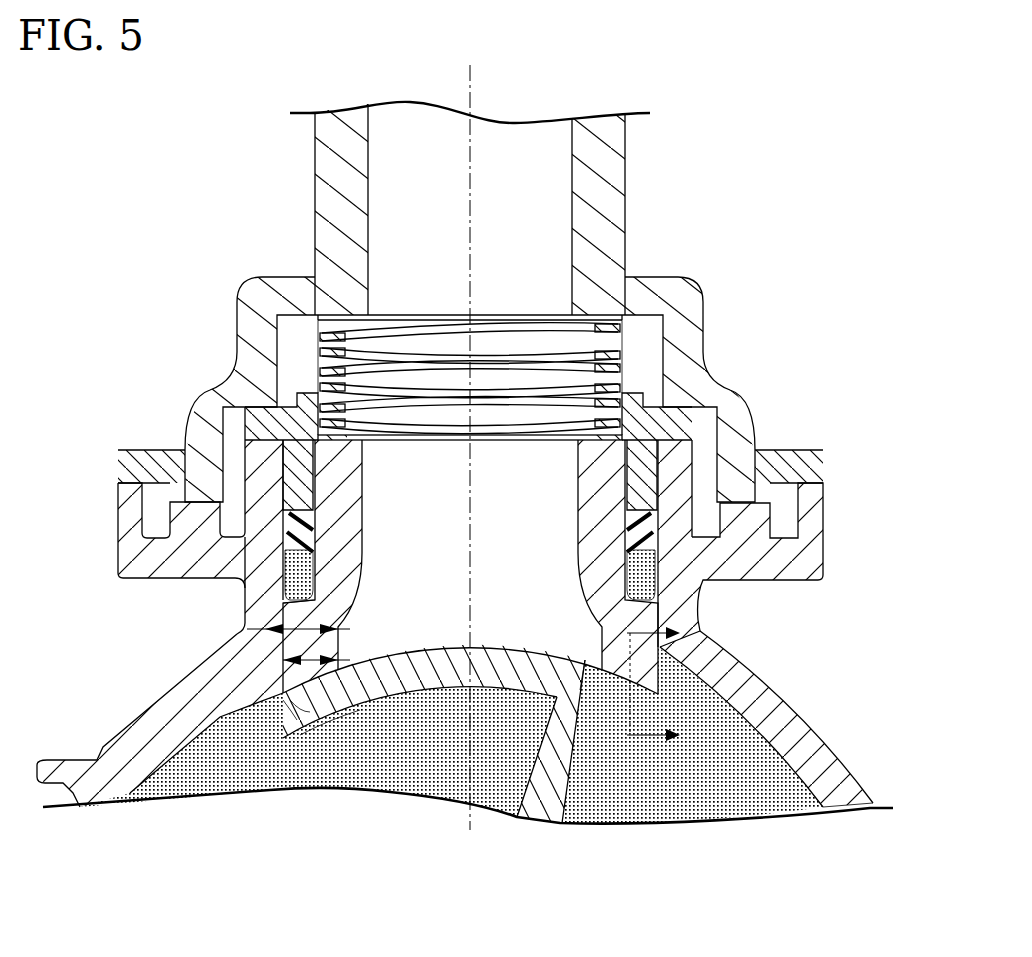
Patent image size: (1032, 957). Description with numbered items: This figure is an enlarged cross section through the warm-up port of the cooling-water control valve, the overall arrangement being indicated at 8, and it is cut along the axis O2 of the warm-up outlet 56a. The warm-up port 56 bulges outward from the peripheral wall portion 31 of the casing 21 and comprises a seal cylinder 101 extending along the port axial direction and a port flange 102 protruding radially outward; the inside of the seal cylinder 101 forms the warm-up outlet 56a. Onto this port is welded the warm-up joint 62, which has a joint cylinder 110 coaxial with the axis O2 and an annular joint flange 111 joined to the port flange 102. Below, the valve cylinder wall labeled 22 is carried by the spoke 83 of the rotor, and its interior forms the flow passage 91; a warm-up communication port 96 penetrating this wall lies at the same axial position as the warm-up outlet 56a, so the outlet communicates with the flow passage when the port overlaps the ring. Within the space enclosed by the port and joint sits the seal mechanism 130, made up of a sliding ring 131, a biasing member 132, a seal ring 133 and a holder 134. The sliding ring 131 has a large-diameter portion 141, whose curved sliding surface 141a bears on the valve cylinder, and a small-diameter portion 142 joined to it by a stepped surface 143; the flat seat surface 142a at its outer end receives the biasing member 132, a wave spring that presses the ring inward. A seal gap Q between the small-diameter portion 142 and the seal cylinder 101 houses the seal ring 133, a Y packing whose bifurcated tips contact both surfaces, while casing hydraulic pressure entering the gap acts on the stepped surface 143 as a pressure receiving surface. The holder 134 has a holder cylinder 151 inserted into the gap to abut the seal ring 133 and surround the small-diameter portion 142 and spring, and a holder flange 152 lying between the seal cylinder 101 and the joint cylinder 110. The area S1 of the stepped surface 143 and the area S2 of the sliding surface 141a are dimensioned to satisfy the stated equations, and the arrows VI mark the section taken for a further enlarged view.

The sealing device 8 is at (790, 110).
The axis of the warm-up outlet O2 is at (475, 74).
The warm-up joint 62 is at (640, 182).
The joint cylinder 110 is at (245, 313).
The biasing member 132 is at (607, 318).
The small-diameter portion 142 is at (395, 433).
The seat surface 142a is at (347, 420).
The seal mechanism 130 is at (645, 353).
The holder flange 152 is at (680, 420).
The holder 134 is at (712, 415).
The seal cylinder 101 is at (682, 470).
The port flange 102 is at (773, 575).
The joint flange 111 is at (826, 462).
The warm-up port 56 is at (840, 519).
The holder cylinder 151 is at (600, 488).
The seal ring 133 is at (290, 520).
The casing 21 is at (125, 700).
The outer shell wall 22 is at (750, 757).
The large-diameter portion 141 is at (370, 710).
The sliding surface 141a is at (327, 700).
The sliding ring 131 is at (303, 710).
The warm-up communication port 96 is at (297, 707).
The flow passage 91 is at (428, 766).
The spoke 83 is at (542, 815).
The warm-up outlet 56a is at (575, 808).
The peripheral wall portion 31 is at (848, 797).
The seal gap Q is at (213, 598).
The stepped surface 143 is at (283, 620).
The area of the stepped surface S1 is at (340, 618).
The area of the sliding surface S2 is at (287, 660).
The section VI is at (648, 688).